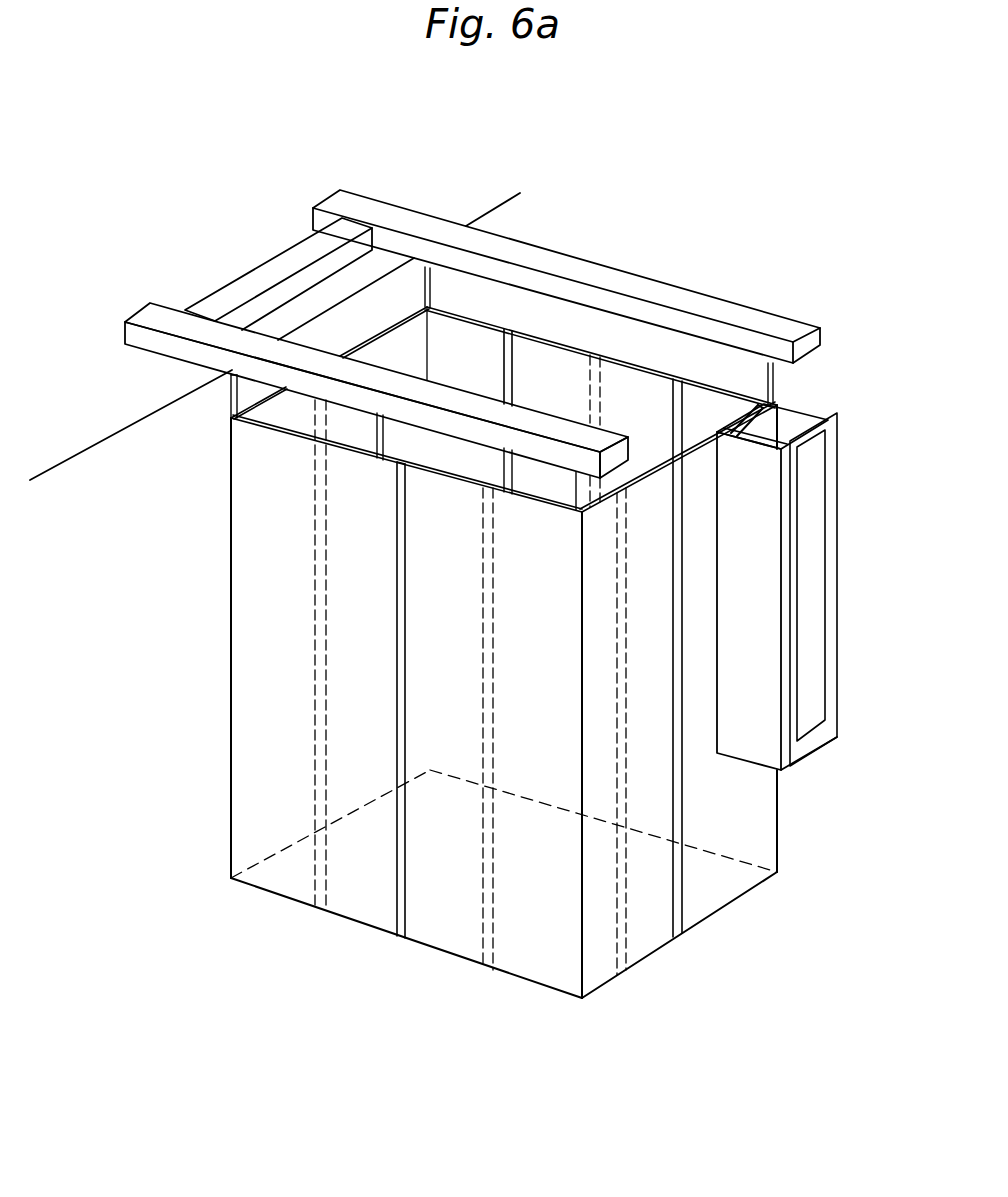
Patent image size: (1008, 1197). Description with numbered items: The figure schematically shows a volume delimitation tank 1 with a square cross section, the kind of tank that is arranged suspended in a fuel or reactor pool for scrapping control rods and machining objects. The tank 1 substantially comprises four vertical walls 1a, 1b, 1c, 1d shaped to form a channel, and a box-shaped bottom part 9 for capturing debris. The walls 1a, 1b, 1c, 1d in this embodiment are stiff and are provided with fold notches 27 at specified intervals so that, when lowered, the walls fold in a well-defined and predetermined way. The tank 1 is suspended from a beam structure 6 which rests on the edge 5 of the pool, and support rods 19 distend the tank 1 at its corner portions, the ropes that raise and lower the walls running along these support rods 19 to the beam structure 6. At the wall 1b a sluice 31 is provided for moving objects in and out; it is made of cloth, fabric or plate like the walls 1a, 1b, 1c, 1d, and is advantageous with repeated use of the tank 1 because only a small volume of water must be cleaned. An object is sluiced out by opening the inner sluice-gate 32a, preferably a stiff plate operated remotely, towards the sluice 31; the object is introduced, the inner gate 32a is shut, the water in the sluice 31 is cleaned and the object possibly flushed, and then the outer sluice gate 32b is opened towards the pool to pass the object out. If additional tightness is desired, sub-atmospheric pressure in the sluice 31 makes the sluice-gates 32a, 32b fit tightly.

The volume delimitation tank 1 is at (204, 662).
The vertical wall 1a is at (557, 372).
The vertical wall 1b is at (755, 826).
The vertical wall 1c is at (252, 743).
The vertical wall 1d is at (288, 410).
The edge of the pool 5 is at (97, 440).
The beam structure 6 is at (268, 279).
The bottom part 9 is at (373, 893).
The support rod 19 is at (434, 280).
The fold notch 27 is at (490, 967).
The sluice 31 is at (755, 740).
The inner sluice-gate 32a is at (752, 430).
The outer sluice gate 32b is at (813, 494).